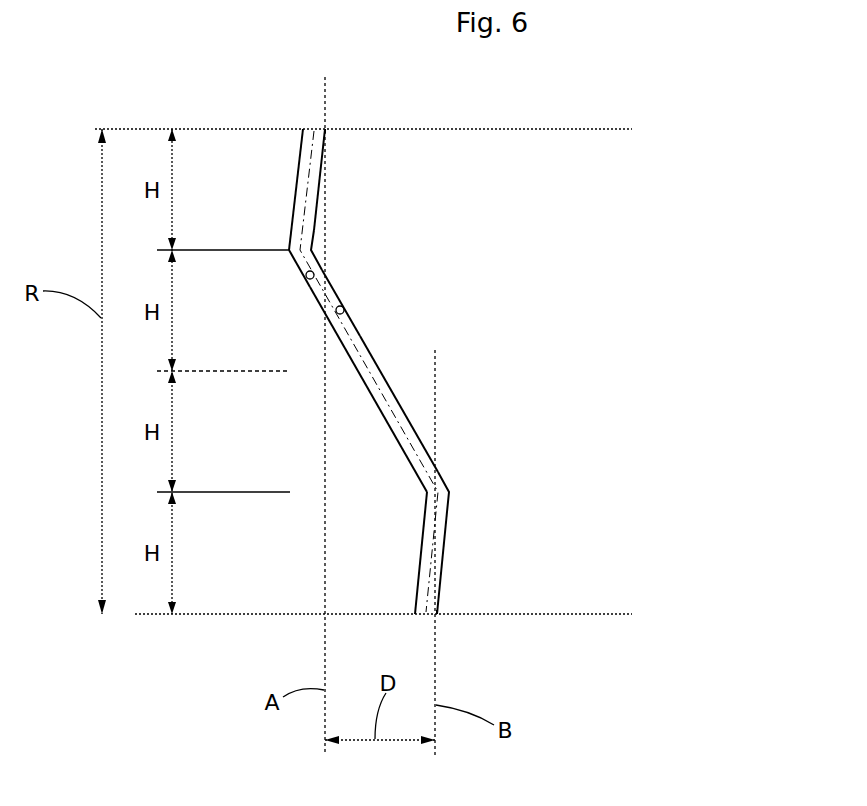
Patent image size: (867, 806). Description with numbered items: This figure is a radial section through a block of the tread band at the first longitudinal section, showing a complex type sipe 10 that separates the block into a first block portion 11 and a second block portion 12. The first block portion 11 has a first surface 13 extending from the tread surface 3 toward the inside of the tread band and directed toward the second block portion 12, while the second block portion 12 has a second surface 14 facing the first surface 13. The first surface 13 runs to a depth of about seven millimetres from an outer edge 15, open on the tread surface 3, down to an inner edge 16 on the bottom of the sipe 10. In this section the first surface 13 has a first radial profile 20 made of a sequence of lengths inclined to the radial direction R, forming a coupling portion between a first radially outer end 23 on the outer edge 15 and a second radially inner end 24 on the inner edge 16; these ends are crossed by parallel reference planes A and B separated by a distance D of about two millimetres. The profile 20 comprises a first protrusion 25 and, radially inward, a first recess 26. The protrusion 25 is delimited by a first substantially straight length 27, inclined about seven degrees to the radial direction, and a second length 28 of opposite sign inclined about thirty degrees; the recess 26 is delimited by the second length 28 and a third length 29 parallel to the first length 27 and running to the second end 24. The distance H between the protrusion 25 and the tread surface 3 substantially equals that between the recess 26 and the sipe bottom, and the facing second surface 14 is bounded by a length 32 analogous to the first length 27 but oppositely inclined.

The tread surface 3 is at (531, 128).
The complex type sipe 10 is at (312, 128).
The first block portion 11 is at (495, 229).
The second block portion 12 is at (216, 184).
The first surface 13 is at (345, 305).
The second surface 14 is at (306, 272).
The outer edge 15 is at (385, 107).
The inner edge 16 is at (502, 636).
The first radial profile 20 is at (401, 396).
The first radially outer end 23 is at (327, 128).
The second radially inner end 24 is at (438, 616).
The first protrusion 25 is at (312, 249).
The first recess 26 is at (450, 491).
The first substantially straight length 27 is at (325, 172).
The second substantially straight length 28 is at (357, 330).
The third length 29 is at (446, 530).
The length 32 is at (300, 172).